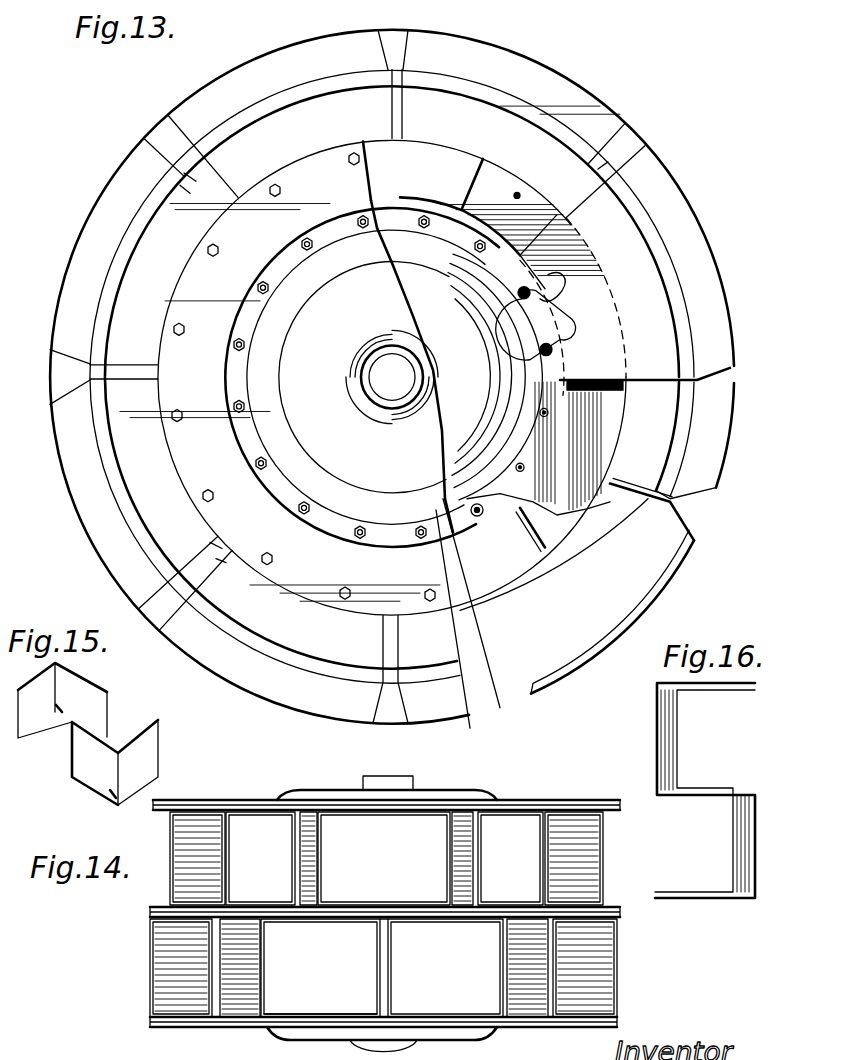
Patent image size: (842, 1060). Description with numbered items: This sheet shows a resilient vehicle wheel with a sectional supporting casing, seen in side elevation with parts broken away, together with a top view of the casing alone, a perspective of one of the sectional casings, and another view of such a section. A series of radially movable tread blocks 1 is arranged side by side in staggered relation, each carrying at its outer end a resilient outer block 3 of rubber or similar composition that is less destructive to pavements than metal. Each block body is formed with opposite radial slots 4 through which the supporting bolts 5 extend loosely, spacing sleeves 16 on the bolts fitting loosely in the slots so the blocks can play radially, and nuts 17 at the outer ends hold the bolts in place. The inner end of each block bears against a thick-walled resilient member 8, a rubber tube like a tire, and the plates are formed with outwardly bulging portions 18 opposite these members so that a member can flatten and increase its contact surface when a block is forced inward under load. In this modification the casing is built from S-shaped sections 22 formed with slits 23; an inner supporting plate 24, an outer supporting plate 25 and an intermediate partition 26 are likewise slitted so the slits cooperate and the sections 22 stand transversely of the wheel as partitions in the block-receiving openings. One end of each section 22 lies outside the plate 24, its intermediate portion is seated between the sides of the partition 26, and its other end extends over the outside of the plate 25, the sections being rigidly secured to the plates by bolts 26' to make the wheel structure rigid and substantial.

In FIG. 13, the tread block 1 is at (655, 247).
In FIG. 13, the outer block 3 is at (703, 314).
In FIG. 13, the slot 4 is at (560, 336).
In FIG. 13, the supporting bolt 5 is at (258, 289).
In FIG. 13, the resilient member 8 is at (462, 426).
In FIG. 13, the spacing sleeve 16 is at (526, 302).
In FIG. 13, the nut 17 is at (240, 348).
In FIG. 13, the outwardly bulging portion 18 is at (312, 390).
In FIG. 14, the outwardly bulging portion 18 is at (290, 1040).
In FIG. 13, the S-shaped section 22 is at (417, 158).
In FIG. 15, the S-shaped section 22 is at (95, 712).
In FIG. 16, the S-shaped section 22 is at (660, 773).
In FIG. 14, the S-shaped section 22 is at (305, 860).
In FIG. 13, the slit 23 is at (545, 545).
In FIG. 15, the slit 23 is at (62, 705).
In FIG. 14, the inner supporting plate 24 is at (545, 806).
In FIG. 13, the outer supporting plate 25 is at (417, 220).
In FIG. 14, the outer supporting plate 25 is at (275, 1014).
In FIG. 13, the intermediate partition 26 is at (560, 448).
In FIG. 14, the intermediate partition 26 is at (405, 948).
In FIG. 13, the bolt 26' is at (373, 360).